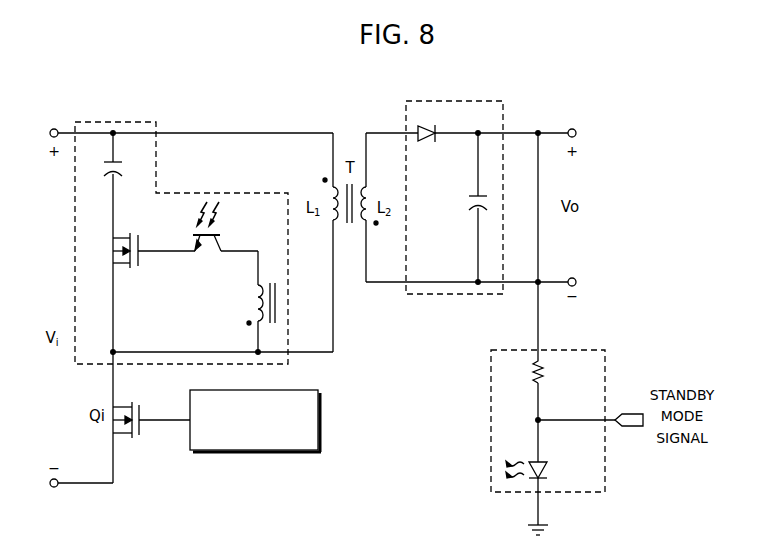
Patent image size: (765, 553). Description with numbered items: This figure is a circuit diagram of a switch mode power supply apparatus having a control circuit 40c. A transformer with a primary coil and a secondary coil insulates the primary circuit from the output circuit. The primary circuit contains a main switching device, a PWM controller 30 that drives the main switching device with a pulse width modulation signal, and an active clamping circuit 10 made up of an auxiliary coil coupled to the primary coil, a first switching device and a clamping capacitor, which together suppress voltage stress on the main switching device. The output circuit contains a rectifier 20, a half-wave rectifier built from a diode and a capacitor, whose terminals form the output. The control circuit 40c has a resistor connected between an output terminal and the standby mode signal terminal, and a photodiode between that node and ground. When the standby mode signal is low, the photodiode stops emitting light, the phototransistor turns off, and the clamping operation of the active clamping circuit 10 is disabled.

The active clamping circuit 10 is at (185, 193).
The rectifier 20 is at (503, 114).
The PWM controller 30 is at (298, 390).
The control circuit 40c is at (491, 391).